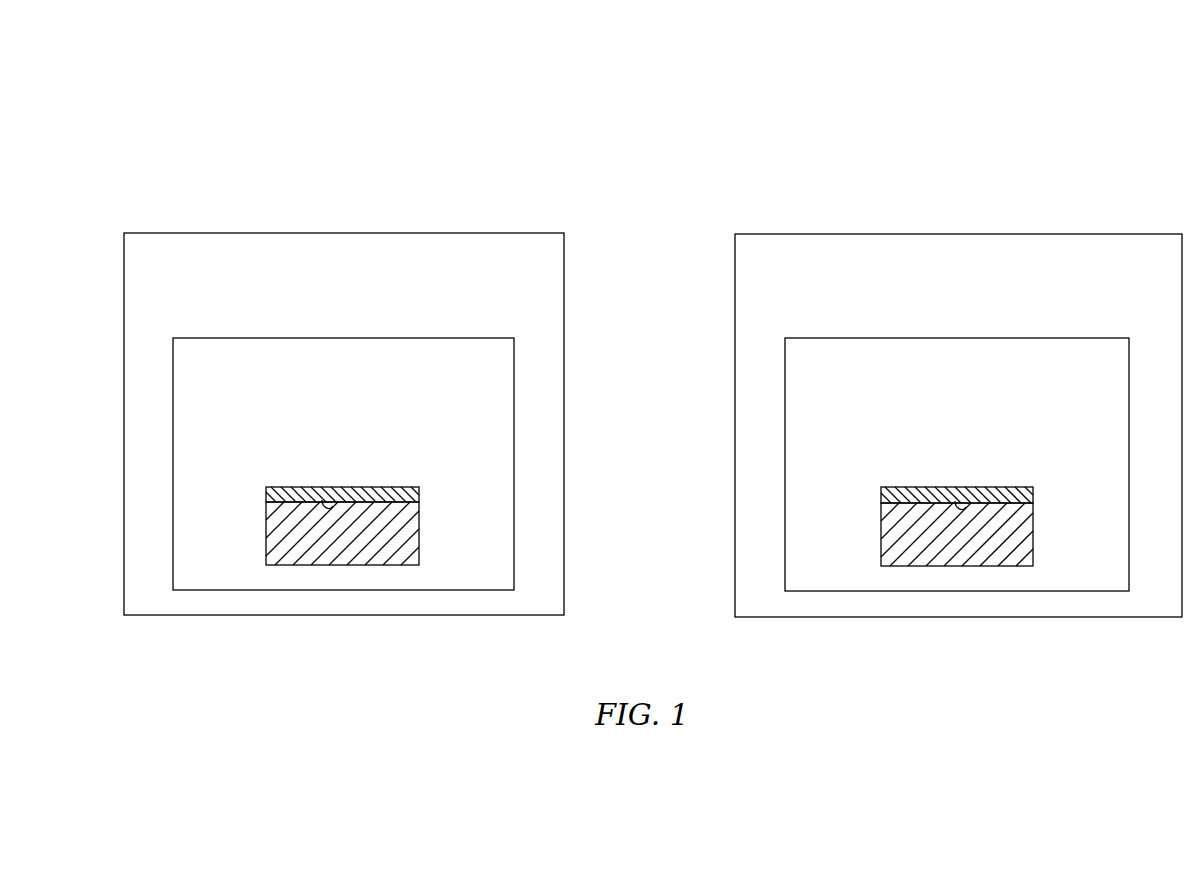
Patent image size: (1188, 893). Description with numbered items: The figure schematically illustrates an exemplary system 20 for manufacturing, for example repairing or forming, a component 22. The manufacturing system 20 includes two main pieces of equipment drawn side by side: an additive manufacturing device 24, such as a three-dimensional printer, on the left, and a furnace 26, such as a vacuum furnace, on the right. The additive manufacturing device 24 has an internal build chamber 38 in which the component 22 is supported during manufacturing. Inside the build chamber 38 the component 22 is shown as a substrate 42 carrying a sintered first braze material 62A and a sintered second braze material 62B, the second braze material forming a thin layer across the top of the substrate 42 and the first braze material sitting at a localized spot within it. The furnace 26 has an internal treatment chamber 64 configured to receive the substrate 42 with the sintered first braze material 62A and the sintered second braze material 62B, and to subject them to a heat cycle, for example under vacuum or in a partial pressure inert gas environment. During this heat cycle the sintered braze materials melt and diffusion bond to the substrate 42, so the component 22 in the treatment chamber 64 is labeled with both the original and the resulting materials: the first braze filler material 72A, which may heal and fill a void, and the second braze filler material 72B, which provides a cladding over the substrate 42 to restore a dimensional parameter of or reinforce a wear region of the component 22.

The system 20 is at (219, 148).
The component 22 is at (648, 494).
The additive manufacturing device 24 is at (503, 233).
The furnace 26 is at (1117, 234).
The build chamber 38 is at (215, 406).
The substrate 42 is at (266, 523).
The sintered first braze material 62A is at (337, 521).
The sintered second braze material 62B is at (272, 495).
The treatment chamber 64 is at (947, 409).
The first braze filler material 72A is at (950, 522).
The second braze filler material 72B is at (895, 493).